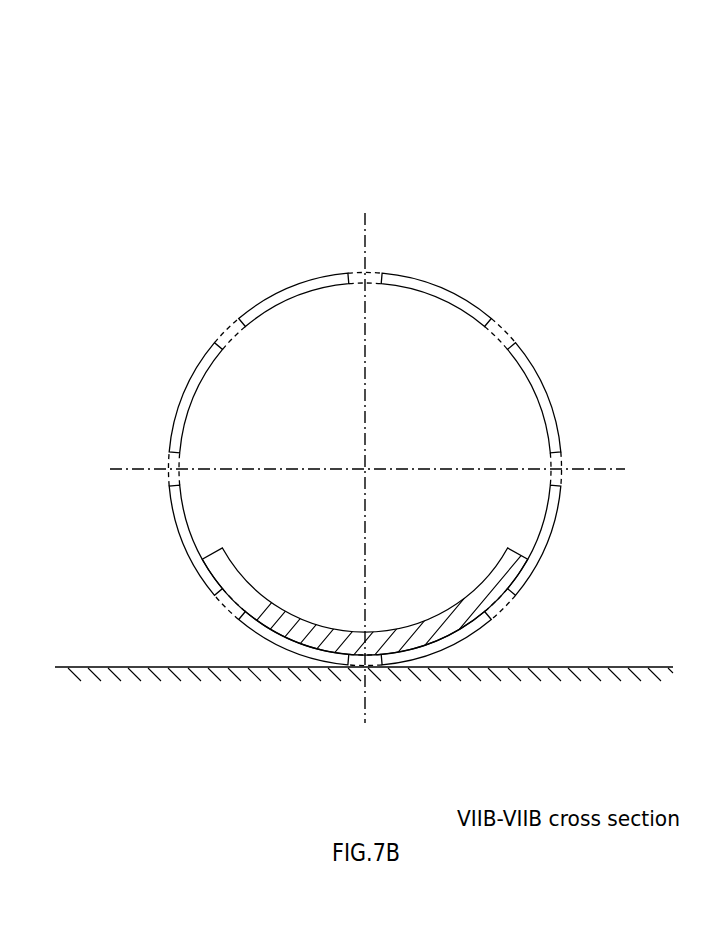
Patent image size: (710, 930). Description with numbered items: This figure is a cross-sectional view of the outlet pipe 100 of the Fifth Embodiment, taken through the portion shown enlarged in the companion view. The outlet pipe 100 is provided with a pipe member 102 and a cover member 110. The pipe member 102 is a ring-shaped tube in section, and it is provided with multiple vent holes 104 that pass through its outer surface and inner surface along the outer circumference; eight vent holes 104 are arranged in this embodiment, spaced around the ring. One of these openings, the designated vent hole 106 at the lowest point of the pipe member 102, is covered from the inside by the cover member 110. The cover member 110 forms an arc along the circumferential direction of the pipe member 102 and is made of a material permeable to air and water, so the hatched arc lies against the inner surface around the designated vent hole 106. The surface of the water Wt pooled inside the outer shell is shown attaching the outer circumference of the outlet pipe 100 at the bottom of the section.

The outlet pipe 100 is at (308, 177).
The pipe member 102 is at (262, 303).
The vent holes 104 is at (162, 458).
The designated vent hole 106 is at (356, 684).
The cover member 110 is at (233, 583).
The water Wt is at (622, 669).